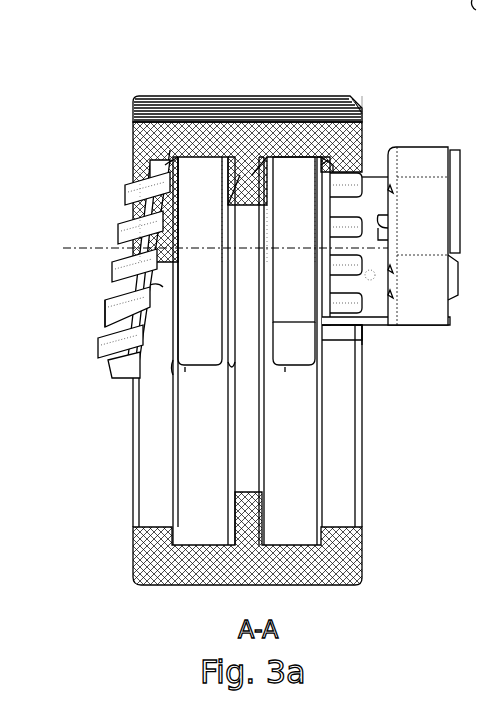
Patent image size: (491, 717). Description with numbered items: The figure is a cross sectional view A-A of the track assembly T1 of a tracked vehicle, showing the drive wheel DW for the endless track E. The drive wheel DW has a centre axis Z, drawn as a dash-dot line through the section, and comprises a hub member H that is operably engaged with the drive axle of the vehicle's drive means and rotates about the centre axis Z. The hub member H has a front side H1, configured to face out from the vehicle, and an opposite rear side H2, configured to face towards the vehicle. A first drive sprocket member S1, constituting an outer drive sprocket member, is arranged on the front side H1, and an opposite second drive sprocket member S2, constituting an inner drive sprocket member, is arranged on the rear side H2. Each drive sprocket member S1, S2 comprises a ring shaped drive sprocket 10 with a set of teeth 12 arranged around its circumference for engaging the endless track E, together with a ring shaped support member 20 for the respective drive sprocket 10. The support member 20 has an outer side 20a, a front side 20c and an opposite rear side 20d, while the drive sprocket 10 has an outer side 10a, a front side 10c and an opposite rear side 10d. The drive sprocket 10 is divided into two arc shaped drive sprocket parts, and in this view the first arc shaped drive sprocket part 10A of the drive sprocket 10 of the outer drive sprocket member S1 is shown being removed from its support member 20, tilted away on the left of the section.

The track assembly T1 is at (262, 80).
The endless track E is at (237, 92).
The hub member H is at (247, 193).
The drive wheel DW is at (268, 147).
The first drive sprocket member S1 is at (165, 160).
The second drive sprocket member S2 is at (323, 165).
The teeth 12 is at (122, 190).
The centre axis Z is at (90, 240).
The front side H1 is at (228, 240).
The rear side H2 is at (268, 240).
The drive sprocket 10 is at (115, 372).
The outer side 10a is at (112, 365).
The front side 10c is at (163, 290).
The first arc shaped drive sprocket part 10A is at (100, 338).
The rear side 10d is at (175, 300).
The support member 20 is at (175, 385).
The outer side 20a is at (205, 372).
The front side 20c is at (172, 365).
The rear side 20d is at (213, 438).